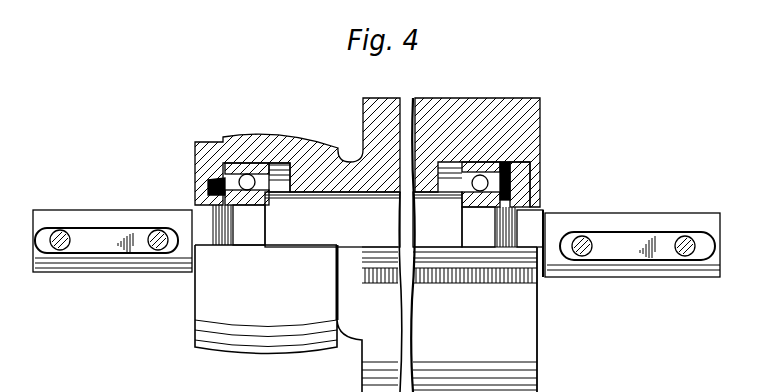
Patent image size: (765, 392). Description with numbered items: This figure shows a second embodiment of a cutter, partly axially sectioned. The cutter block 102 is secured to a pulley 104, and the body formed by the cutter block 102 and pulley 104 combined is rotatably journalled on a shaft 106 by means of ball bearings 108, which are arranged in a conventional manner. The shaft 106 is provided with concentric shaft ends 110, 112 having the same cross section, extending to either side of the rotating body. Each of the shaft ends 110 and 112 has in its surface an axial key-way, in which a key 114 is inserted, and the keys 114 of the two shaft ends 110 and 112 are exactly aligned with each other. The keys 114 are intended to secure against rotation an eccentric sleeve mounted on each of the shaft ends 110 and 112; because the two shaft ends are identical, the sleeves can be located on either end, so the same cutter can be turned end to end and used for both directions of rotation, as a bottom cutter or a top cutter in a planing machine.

The cutter block 102 is at (477, 110).
The pulley 104 is at (265, 137).
The shaft 106 is at (310, 205).
The ball bearings 108 is at (237, 165).
The shaft end 110 is at (128, 217).
The shaft end 112 is at (643, 222).
The key 114 is at (123, 247).